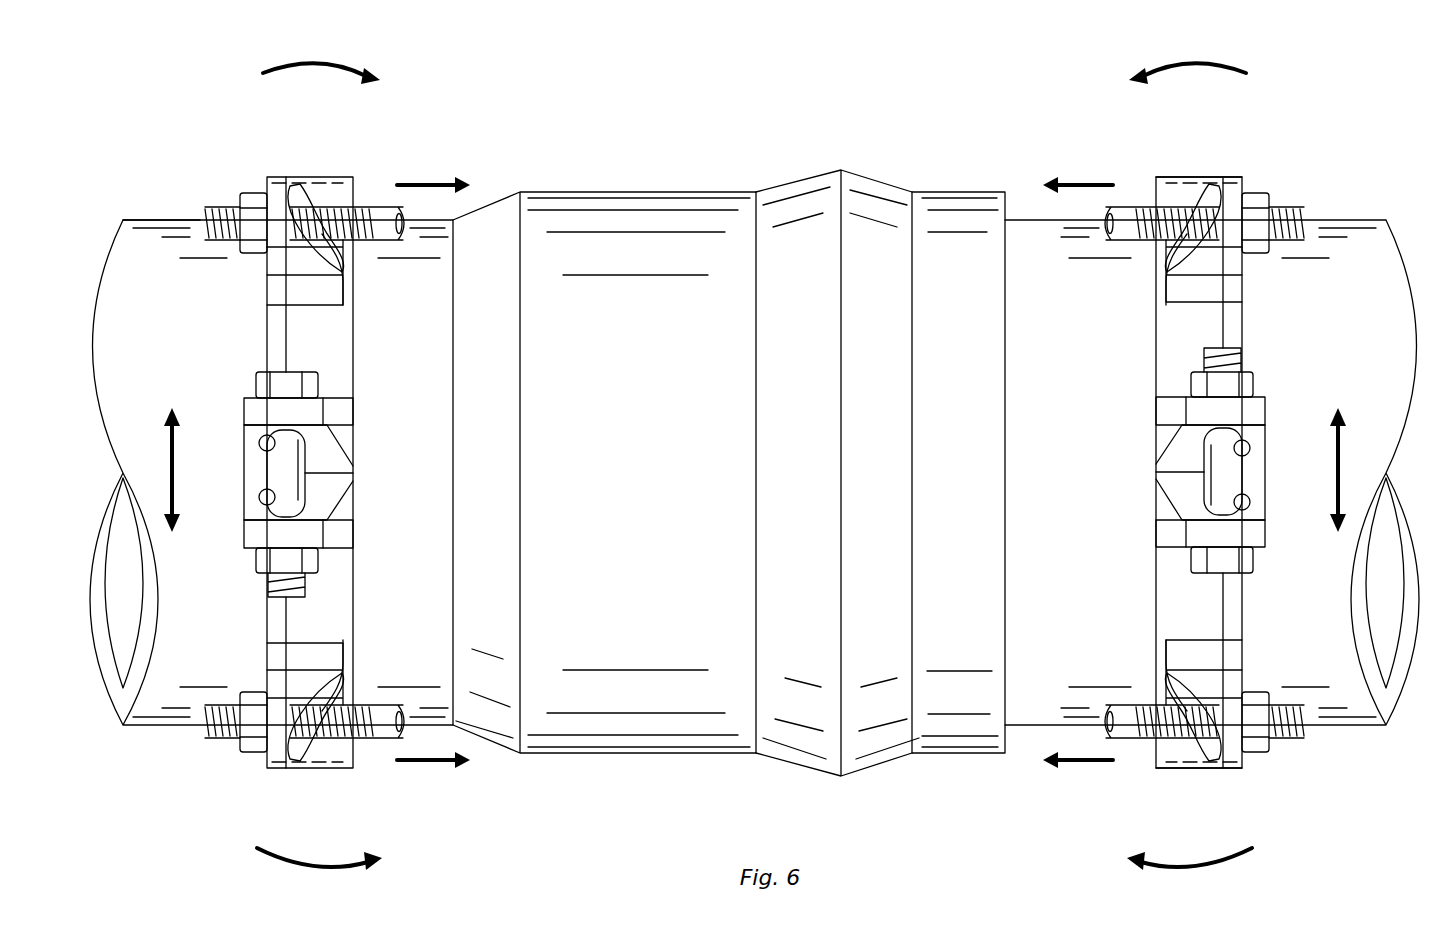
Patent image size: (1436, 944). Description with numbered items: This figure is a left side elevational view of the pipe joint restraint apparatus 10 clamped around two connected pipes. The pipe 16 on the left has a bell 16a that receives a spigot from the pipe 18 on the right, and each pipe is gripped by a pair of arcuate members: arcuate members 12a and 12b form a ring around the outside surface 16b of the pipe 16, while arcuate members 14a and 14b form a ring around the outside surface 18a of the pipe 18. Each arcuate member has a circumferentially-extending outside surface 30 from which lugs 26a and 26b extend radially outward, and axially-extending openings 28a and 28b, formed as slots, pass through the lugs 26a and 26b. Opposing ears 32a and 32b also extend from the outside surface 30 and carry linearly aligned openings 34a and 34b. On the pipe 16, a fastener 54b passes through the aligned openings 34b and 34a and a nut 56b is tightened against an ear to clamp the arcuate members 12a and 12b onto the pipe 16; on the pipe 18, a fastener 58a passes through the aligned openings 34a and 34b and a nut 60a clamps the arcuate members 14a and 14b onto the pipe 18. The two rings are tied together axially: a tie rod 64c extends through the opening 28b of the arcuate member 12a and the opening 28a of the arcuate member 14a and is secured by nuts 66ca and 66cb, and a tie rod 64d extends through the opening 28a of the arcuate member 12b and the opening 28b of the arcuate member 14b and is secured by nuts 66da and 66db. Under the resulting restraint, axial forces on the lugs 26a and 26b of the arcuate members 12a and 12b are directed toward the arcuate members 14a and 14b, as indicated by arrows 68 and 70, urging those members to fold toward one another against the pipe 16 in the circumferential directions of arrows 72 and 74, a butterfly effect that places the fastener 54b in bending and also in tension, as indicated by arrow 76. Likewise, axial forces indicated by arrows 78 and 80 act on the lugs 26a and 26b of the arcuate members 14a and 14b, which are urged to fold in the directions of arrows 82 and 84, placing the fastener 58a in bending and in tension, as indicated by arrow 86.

The pipe joint restraint apparatus 10 is at (355, 160).
The arcuate member 12a is at (355, 358).
The arcuate member 12b is at (355, 572).
The arcuate member 14a is at (1154, 358).
The arcuate member 14b is at (1154, 572).
The pipe 16 is at (195, 620).
The bell 16a is at (619, 479).
The outside surface 16b is at (164, 255).
The pipe 18 is at (1286, 620).
The outside surface 18a is at (1040, 525).
The lug 26a is at (305, 770).
The lug 26b is at (300, 186).
The axially-extending opening 28a is at (345, 700).
The axially-extending opening 28b is at (347, 252).
The outside surface 30 is at (1185, 180).
The ear 32a is at (244, 538).
The ear 32b is at (245, 410).
The opening 34a is at (260, 498).
The opening 34b is at (260, 445).
The fastener 54b is at (255, 385).
The nut 56b is at (320, 567).
The fastener 58a is at (1254, 385).
The nut 60a is at (1190, 567).
The tie rod 64c is at (1132, 205).
The tie rod 64d is at (377, 742).
The nut 66ca is at (250, 192).
The nut 66cb is at (1260, 192).
The nut 66da is at (250, 755).
The nut 66db is at (1259, 755).
The arrow 68 is at (426, 182).
The arrow 70 is at (432, 765).
The arrow 72 is at (278, 72).
The arrow 74 is at (283, 862).
The arrow 76 is at (168, 455).
The arrow 78 is at (1080, 182).
The arrow 80 is at (1082, 765).
The arrow 82 is at (1232, 72).
The arrow 84 is at (1226, 862).
The arrow 86 is at (1342, 455).